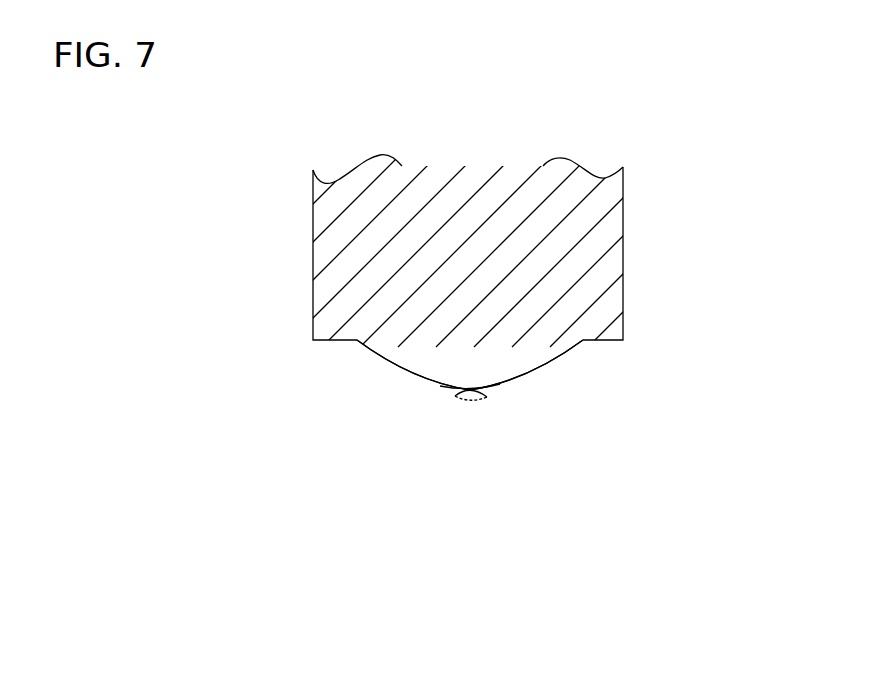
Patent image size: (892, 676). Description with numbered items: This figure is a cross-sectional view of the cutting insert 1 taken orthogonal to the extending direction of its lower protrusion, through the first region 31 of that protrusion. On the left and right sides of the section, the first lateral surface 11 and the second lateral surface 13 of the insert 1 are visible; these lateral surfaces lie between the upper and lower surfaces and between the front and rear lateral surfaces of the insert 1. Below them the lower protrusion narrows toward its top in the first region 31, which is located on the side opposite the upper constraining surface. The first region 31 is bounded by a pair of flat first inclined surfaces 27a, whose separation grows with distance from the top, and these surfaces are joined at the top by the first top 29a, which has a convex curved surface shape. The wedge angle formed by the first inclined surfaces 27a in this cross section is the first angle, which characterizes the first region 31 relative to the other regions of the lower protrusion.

The insert 1 is at (418, 130).
The first lateral surface 11 is at (313, 262).
The second lateral surface 13 is at (623, 255).
The first region 31 is at (470, 365).
The first inclined surfaces 27a is at (375, 355).
The first top 29a is at (450, 392).